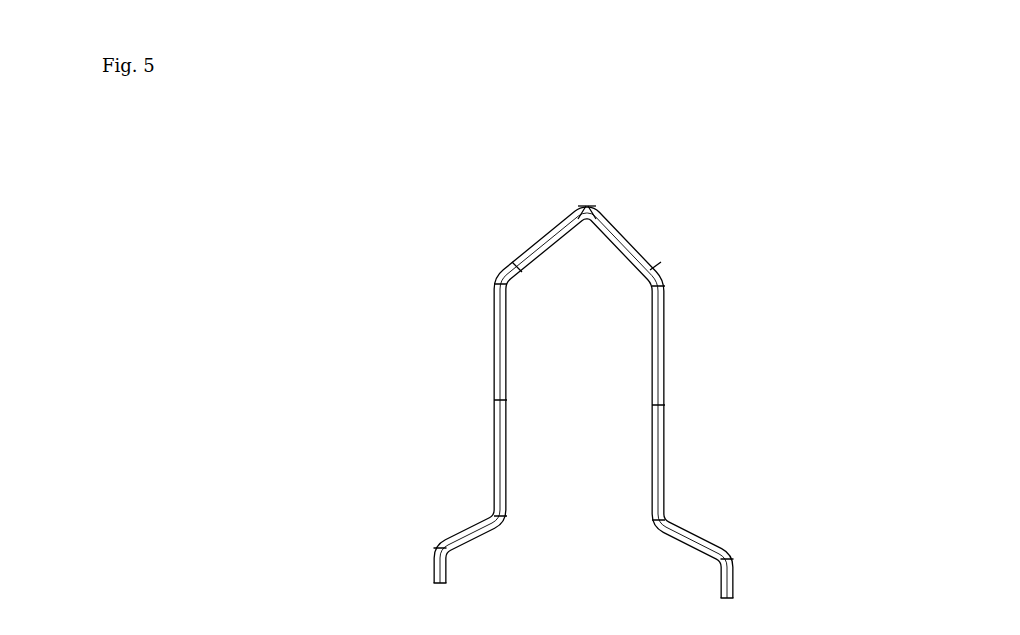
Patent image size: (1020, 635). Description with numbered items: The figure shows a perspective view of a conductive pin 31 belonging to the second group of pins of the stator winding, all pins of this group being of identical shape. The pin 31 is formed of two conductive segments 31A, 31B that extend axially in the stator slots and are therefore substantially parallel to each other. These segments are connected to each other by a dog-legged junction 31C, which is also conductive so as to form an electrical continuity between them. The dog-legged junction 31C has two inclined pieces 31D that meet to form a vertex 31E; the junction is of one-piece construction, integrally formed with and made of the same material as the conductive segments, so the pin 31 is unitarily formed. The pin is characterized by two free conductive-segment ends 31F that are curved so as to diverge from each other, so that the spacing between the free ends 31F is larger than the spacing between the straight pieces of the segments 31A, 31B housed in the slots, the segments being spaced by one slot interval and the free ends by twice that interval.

The conductive pin 31 is at (297, 218).
The conductive segment 31A is at (493, 373).
The conductive segment 31B is at (666, 383).
The dog-legged junction 31C is at (609, 228).
The inclined piece 31D is at (510, 270).
The vertex 31E is at (578, 213).
The free conductive-segment end 31F is at (436, 553).